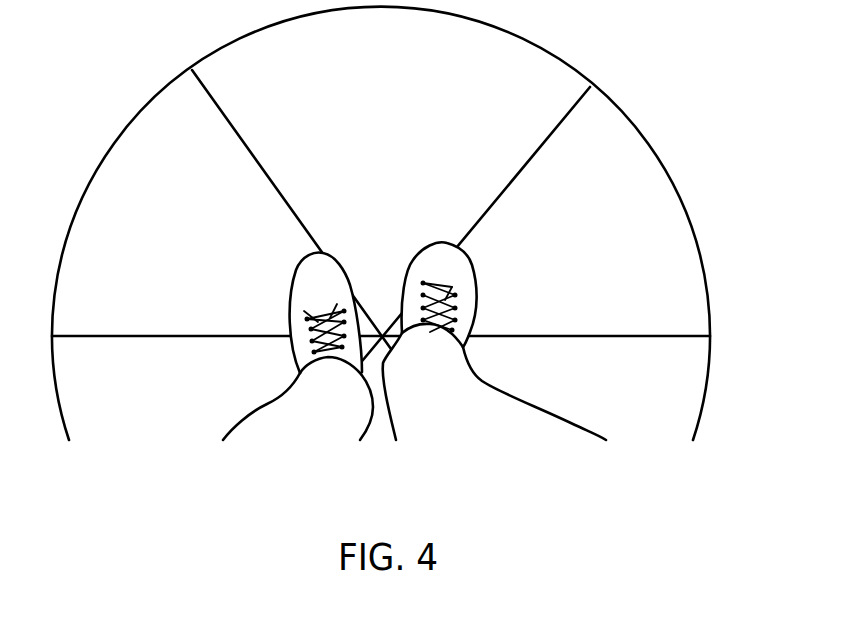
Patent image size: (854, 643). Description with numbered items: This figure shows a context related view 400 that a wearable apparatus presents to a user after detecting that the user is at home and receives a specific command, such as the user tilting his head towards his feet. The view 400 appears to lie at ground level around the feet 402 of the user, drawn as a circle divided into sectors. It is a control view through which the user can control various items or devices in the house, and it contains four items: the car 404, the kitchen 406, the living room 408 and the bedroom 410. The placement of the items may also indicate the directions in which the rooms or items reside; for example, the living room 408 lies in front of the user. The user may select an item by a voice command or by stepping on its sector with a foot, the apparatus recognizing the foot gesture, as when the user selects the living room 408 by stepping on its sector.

The view 400 is at (567, 63).
The feet 402 is at (518, 398).
The car 404 is at (183, 396).
The kitchen 406 is at (163, 207).
The living room 408 is at (441, 116).
The bedroom 410 is at (552, 210).